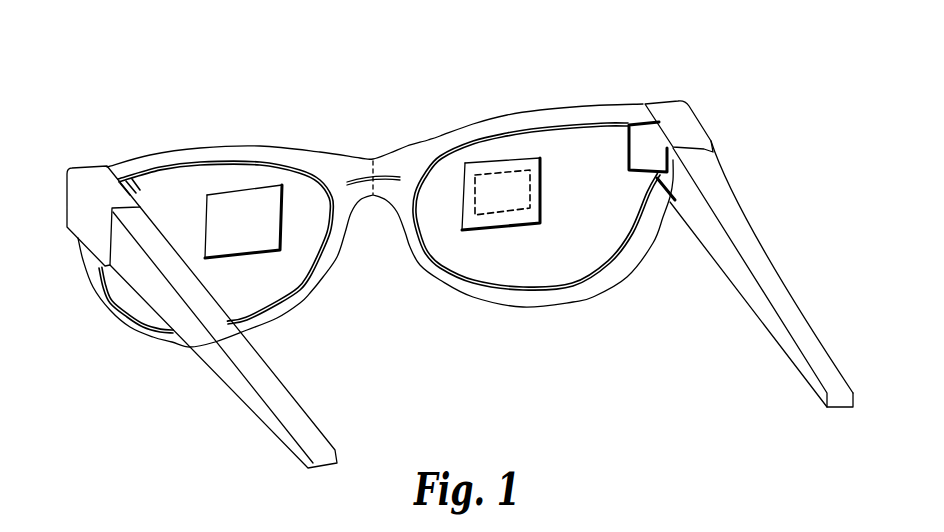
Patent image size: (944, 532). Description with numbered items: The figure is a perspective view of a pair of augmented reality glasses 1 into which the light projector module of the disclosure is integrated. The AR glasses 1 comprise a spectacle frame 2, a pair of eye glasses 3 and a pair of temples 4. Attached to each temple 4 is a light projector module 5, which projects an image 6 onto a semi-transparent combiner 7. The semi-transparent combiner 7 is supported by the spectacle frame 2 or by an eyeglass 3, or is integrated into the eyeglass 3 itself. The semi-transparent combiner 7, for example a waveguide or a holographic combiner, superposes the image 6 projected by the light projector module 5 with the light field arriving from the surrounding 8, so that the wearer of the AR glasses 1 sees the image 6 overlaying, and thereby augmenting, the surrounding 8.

The augmented reality glasses 1 is at (244, 92).
The spectacle frame 2 is at (367, 160).
The eye glasses 3 is at (265, 290).
The temples 4 is at (210, 355).
The light projector module 5 is at (95, 152).
The image 6 is at (522, 178).
The semi-transparent combiner 7 is at (215, 213).
The surrounding 8 is at (422, 84).